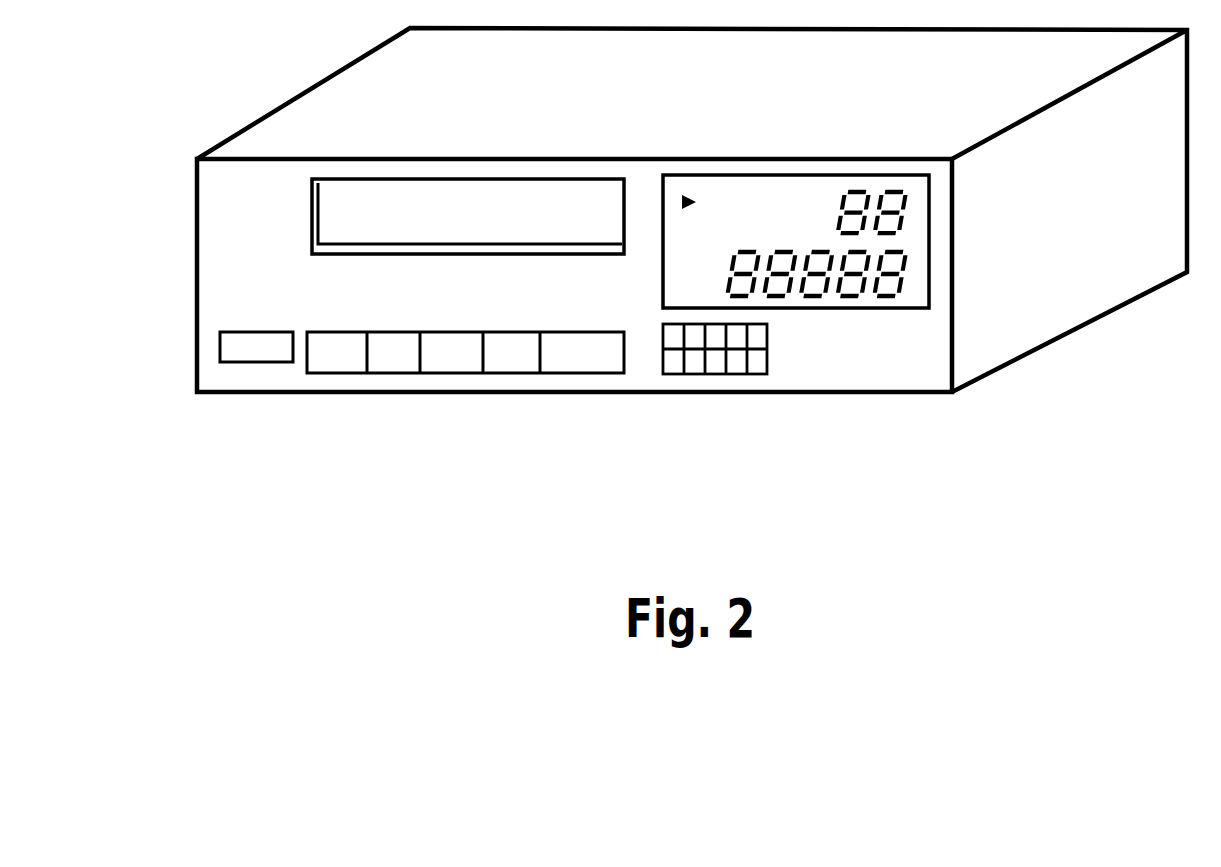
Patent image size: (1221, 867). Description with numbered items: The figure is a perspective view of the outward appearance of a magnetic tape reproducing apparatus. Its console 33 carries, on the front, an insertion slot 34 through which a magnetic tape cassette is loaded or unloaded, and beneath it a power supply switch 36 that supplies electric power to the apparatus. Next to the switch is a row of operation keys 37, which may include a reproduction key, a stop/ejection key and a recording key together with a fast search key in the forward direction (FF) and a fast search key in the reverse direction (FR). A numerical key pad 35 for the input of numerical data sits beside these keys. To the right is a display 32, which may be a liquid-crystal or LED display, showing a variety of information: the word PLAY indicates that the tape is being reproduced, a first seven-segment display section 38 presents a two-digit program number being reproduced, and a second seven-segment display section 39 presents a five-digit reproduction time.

The display 32 is at (868, 324).
The console 33 is at (200, 250).
The insertion slot 34 is at (328, 178).
The numerical key pad 35 is at (695, 375).
The power supply switch 36 is at (235, 363).
The operation keys 37 is at (623, 399).
The first 7 segment display section 38 is at (917, 212).
The second 7 segment display section 39 is at (910, 288).